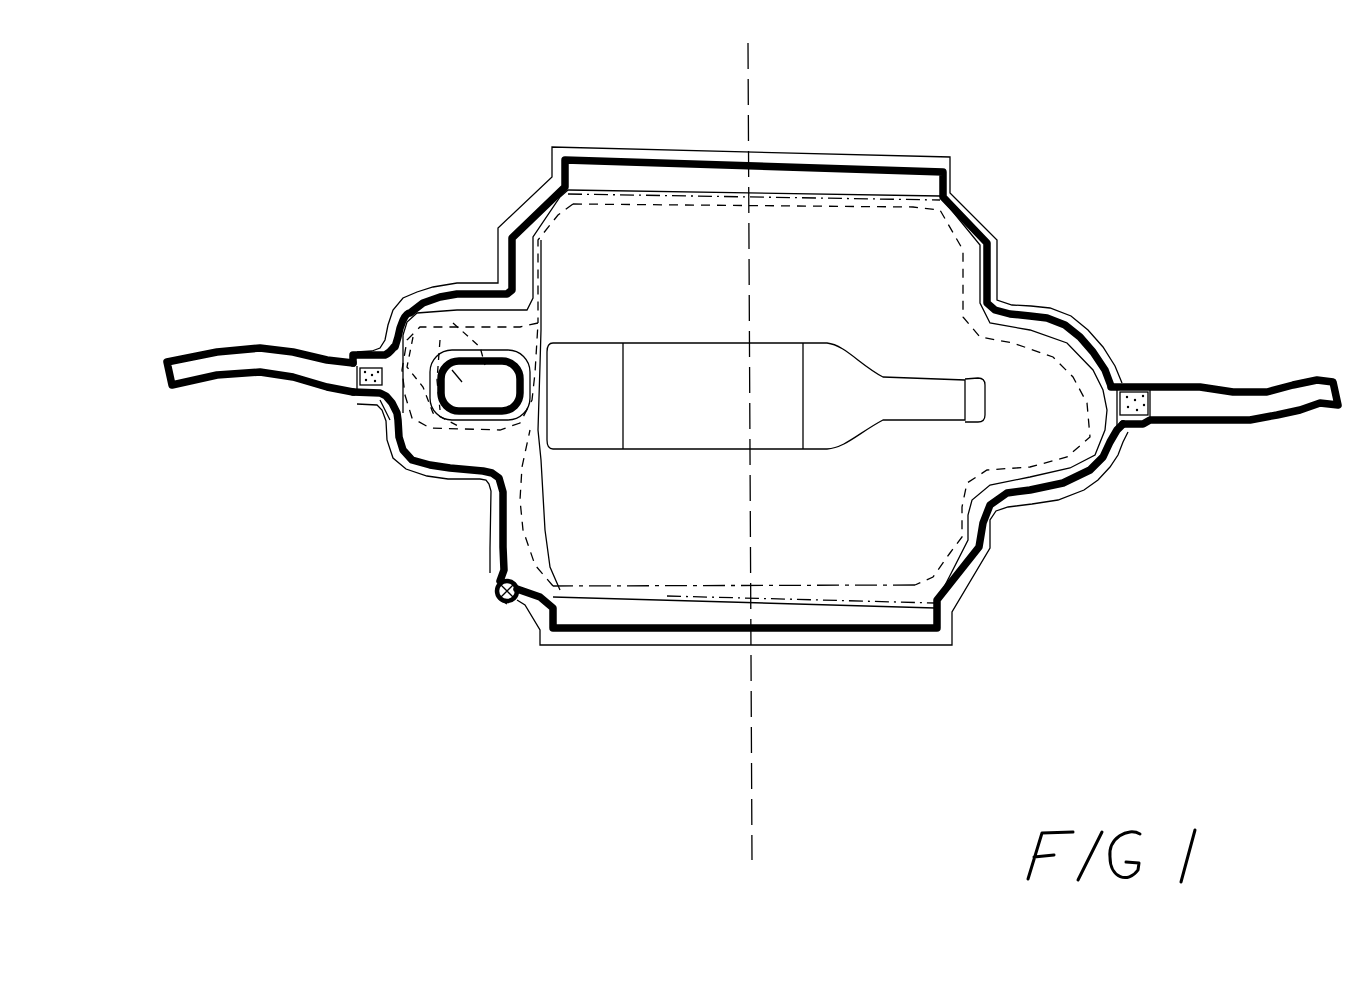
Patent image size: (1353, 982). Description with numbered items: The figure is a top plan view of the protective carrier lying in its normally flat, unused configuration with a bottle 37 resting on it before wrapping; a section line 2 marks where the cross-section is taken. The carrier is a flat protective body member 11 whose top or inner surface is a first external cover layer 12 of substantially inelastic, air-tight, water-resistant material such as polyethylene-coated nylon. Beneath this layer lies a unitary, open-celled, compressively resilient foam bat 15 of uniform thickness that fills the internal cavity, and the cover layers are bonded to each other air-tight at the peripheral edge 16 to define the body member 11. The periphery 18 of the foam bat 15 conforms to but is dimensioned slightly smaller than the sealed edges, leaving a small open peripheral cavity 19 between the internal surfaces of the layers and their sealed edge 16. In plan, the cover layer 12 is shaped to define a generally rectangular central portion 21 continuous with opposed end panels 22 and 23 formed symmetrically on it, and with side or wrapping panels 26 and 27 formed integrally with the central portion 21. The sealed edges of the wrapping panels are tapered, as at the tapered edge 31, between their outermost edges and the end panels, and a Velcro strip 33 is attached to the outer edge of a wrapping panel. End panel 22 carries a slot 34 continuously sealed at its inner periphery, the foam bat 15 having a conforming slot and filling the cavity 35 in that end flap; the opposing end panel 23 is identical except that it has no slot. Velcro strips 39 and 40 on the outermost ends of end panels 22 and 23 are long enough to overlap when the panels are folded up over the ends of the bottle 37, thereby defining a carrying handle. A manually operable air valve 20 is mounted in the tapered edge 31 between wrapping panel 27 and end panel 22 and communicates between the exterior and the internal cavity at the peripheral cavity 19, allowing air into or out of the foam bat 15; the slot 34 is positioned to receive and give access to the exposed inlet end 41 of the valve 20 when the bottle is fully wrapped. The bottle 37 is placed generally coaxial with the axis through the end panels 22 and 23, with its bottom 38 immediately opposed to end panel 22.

The section line 2- 2 is at (683, 57).
The protective body member 11 is at (910, 250).
The first external cover layer 12 is at (840, 237).
The foam bat 15 is at (825, 533).
The peripheral edge 16 is at (557, 177).
The periphery of the foam bat 18 is at (457, 285).
The peripheral cavity 19 is at (1060, 307).
The air valve 20 is at (496, 611).
The rectangular central portion 21 is at (918, 369).
The end panel 22 is at (417, 397).
The end panel 23 is at (1063, 377).
The wrapping panel 26 is at (688, 275).
The wrapping panel 27 is at (654, 555).
The tapered edge 31 is at (500, 540).
The Velcro strip 33 is at (640, 180).
The slot 34 is at (440, 363).
The cavity 35 is at (488, 285).
The bottle 37 is at (728, 428).
The bottom of the bottle 38 is at (543, 330).
The Velcro strip 39 is at (193, 385).
The Velcro strip 40 is at (1220, 397).
The inlet end of the valve 41 is at (511, 605).